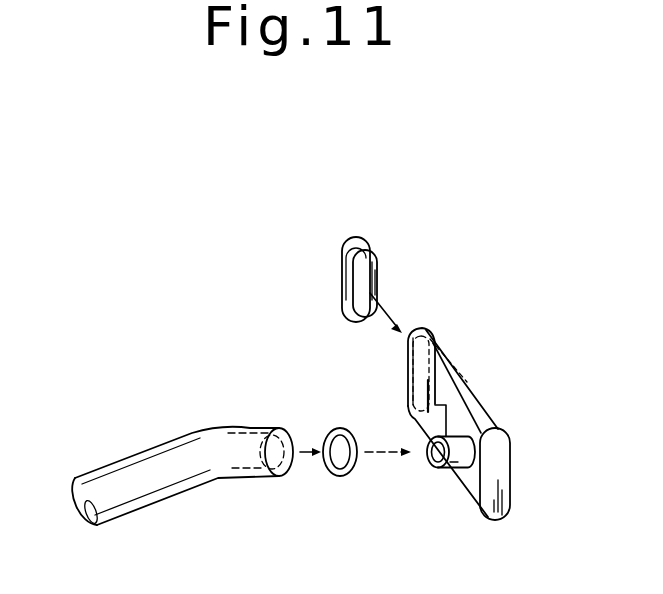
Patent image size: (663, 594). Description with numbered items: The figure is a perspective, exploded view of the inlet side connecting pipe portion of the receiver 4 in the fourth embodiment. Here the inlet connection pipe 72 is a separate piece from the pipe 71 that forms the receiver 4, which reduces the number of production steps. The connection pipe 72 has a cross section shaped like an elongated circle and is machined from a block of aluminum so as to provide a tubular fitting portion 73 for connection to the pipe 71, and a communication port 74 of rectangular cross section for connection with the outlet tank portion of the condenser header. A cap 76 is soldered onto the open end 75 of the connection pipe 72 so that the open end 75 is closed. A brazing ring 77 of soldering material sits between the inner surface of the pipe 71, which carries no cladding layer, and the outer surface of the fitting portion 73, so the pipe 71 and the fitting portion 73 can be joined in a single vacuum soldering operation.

The receiver 4 is at (124, 392).
The pipe 71 is at (173, 452).
The inlet side connection pipe portion 72 is at (505, 458).
The fitting portion 73 is at (450, 469).
The communication port 74 is at (433, 423).
The open end 75 is at (415, 370).
The cap 76 is at (353, 237).
The brazing ring 77 is at (333, 477).